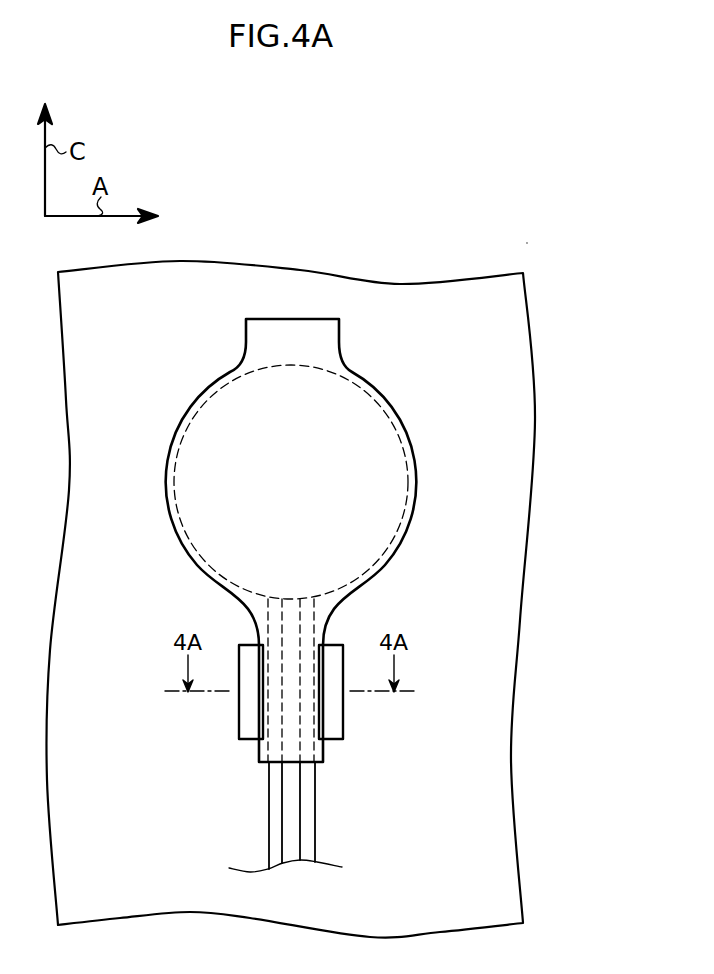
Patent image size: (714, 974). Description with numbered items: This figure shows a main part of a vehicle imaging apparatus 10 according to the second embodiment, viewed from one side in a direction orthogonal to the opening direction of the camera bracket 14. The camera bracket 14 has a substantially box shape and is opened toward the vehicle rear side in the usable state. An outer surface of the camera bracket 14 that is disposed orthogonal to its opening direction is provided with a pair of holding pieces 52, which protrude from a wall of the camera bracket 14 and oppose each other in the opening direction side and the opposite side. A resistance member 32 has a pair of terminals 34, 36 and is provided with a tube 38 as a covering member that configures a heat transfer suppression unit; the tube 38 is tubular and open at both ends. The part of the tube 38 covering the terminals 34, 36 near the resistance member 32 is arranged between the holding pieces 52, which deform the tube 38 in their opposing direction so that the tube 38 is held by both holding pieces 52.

The sensor device 10 is at (535, 238).
The camera bracket 14 is at (525, 372).
The resistance member 32 is at (395, 406).
The terminal 34 is at (317, 813).
The terminal 36 is at (270, 813).
The tube 38 is at (390, 505).
The holding pieces 52 is at (242, 719).